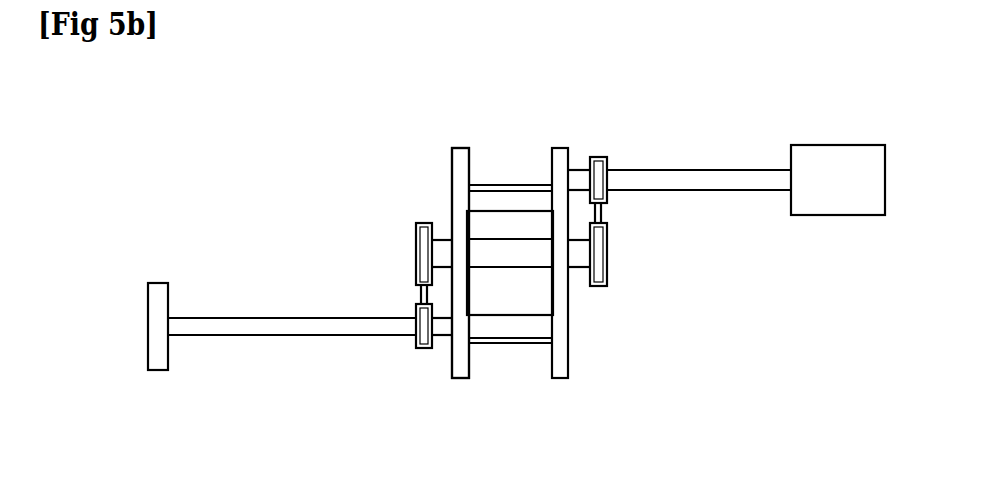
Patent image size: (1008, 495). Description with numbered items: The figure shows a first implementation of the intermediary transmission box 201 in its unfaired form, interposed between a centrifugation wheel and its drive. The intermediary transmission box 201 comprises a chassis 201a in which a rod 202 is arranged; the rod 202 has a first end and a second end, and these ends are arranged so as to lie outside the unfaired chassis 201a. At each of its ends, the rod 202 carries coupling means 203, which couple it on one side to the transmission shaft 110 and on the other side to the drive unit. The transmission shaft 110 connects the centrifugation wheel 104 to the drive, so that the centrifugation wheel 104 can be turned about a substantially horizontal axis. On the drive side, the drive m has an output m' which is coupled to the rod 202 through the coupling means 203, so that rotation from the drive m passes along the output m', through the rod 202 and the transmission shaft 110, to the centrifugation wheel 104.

The intermediary transmission box 201 is at (510, 146).
The chassis 201a is at (462, 370).
The rod 202 is at (512, 257).
The coupling means 203 is at (388, 288).
The transmission shaft 110 is at (293, 325).
The centrifugation wheel 104 is at (160, 290).
The output m' is at (679, 141).
The drive m is at (838, 180).